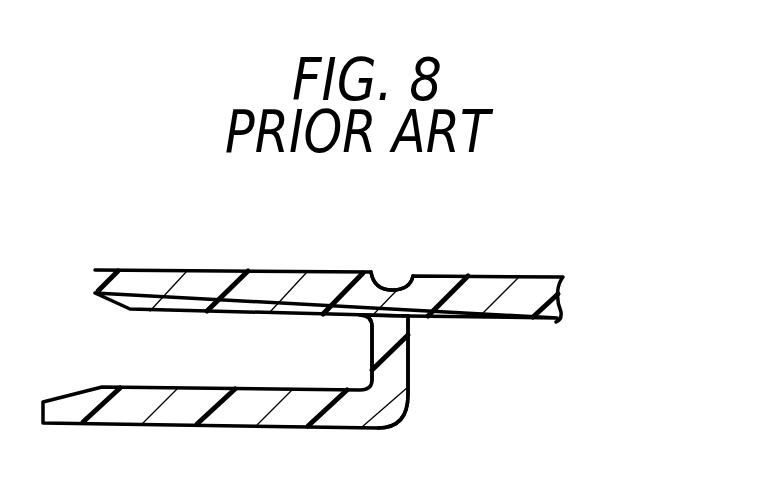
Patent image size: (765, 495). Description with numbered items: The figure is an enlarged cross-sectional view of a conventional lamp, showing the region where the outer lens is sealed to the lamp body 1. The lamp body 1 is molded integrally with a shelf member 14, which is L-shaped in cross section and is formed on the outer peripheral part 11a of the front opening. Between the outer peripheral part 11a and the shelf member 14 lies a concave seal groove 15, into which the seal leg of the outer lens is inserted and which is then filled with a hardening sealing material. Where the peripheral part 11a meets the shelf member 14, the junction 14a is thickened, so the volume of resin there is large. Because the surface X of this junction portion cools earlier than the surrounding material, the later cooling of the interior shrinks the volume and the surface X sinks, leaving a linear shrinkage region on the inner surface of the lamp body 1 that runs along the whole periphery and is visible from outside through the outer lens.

The lamp body 1 is at (366, 257).
The outer peripheral part 11a is at (202, 280).
The surface of the junction portion X is at (392, 278).
The shelf member 14 is at (268, 400).
The junction 14a is at (392, 316).
The seal groove 15 is at (314, 372).